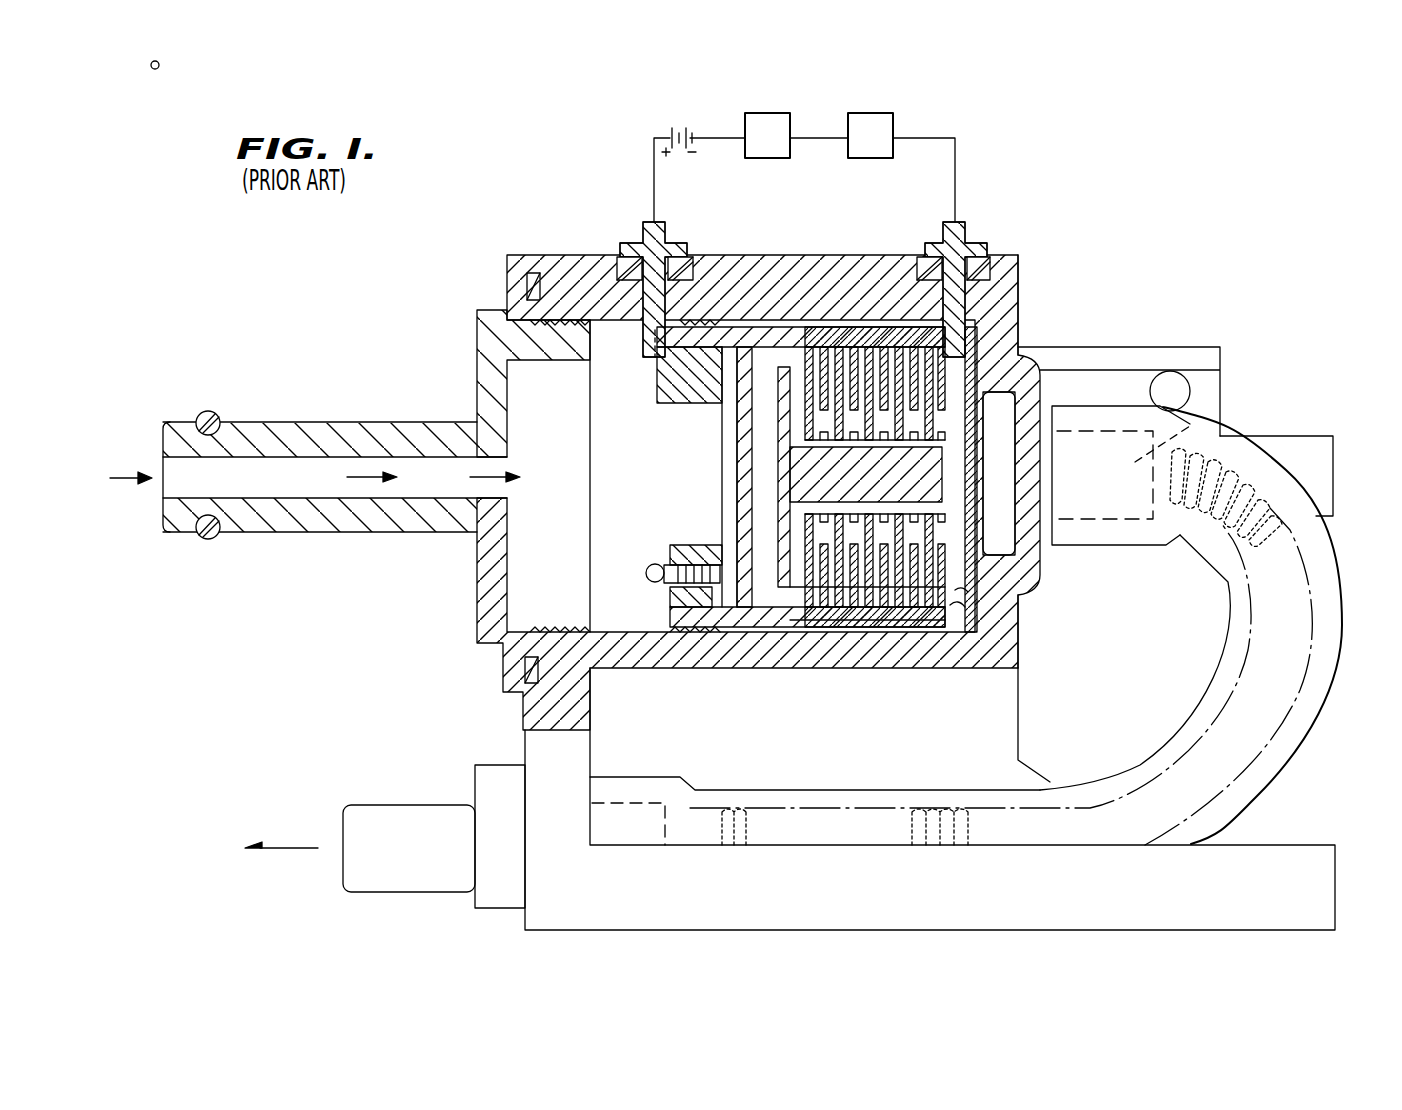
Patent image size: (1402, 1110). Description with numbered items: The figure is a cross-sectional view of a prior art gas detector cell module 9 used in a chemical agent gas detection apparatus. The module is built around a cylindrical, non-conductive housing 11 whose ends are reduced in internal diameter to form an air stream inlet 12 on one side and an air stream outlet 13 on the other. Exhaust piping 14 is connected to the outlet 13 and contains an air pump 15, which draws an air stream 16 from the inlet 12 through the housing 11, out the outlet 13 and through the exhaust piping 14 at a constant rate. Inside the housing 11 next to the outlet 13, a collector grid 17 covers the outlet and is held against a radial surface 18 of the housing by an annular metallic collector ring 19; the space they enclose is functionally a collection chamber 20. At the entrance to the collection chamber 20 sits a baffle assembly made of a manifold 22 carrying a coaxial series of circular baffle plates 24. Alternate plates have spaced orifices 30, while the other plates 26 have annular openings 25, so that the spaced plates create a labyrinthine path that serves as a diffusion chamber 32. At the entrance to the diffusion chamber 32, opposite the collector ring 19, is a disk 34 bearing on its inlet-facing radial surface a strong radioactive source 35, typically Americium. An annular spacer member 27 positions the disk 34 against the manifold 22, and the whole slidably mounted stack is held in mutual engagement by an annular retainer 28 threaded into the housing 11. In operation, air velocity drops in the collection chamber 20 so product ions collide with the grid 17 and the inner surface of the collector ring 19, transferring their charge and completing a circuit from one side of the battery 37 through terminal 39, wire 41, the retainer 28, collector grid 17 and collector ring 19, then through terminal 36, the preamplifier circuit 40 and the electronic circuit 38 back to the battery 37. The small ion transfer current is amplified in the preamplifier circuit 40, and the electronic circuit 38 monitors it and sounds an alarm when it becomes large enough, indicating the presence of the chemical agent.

The gas detector cell module 9 is at (512, 164).
The housing 11 is at (652, 670).
The air stream inlet 12 is at (308, 422).
The air stream outlet 13 is at (1090, 347).
The exhaust piping 14 is at (1343, 620).
The air pump 15 is at (1200, 419).
The air stream 16 is at (114, 479).
The collector grid 17 is at (990, 398).
The radial surface 18 is at (965, 551).
The collector ring 19 is at (950, 640).
The collection chamber 20 is at (1022, 461).
The manifold 22 is at (972, 490).
The baffle plates 24 is at (815, 327).
The annular openings 25 is at (841, 327).
The baffle plates with annular openings 26 is at (866, 327).
The annular spacer member 27 is at (746, 380).
The annular retainer 28 is at (706, 327).
The orifices 30 is at (805, 430).
The diffusion chamber 32 is at (1012, 336).
The disk 34 is at (800, 630).
The radioactive source 35 is at (785, 470).
The terminal 36 is at (968, 243).
The battery 37 is at (670, 128).
The electronic circuit 38 is at (790, 113).
The terminal 39 is at (648, 225).
The preamplifier circuit 40 is at (893, 118).
The wire 41 is at (658, 562).